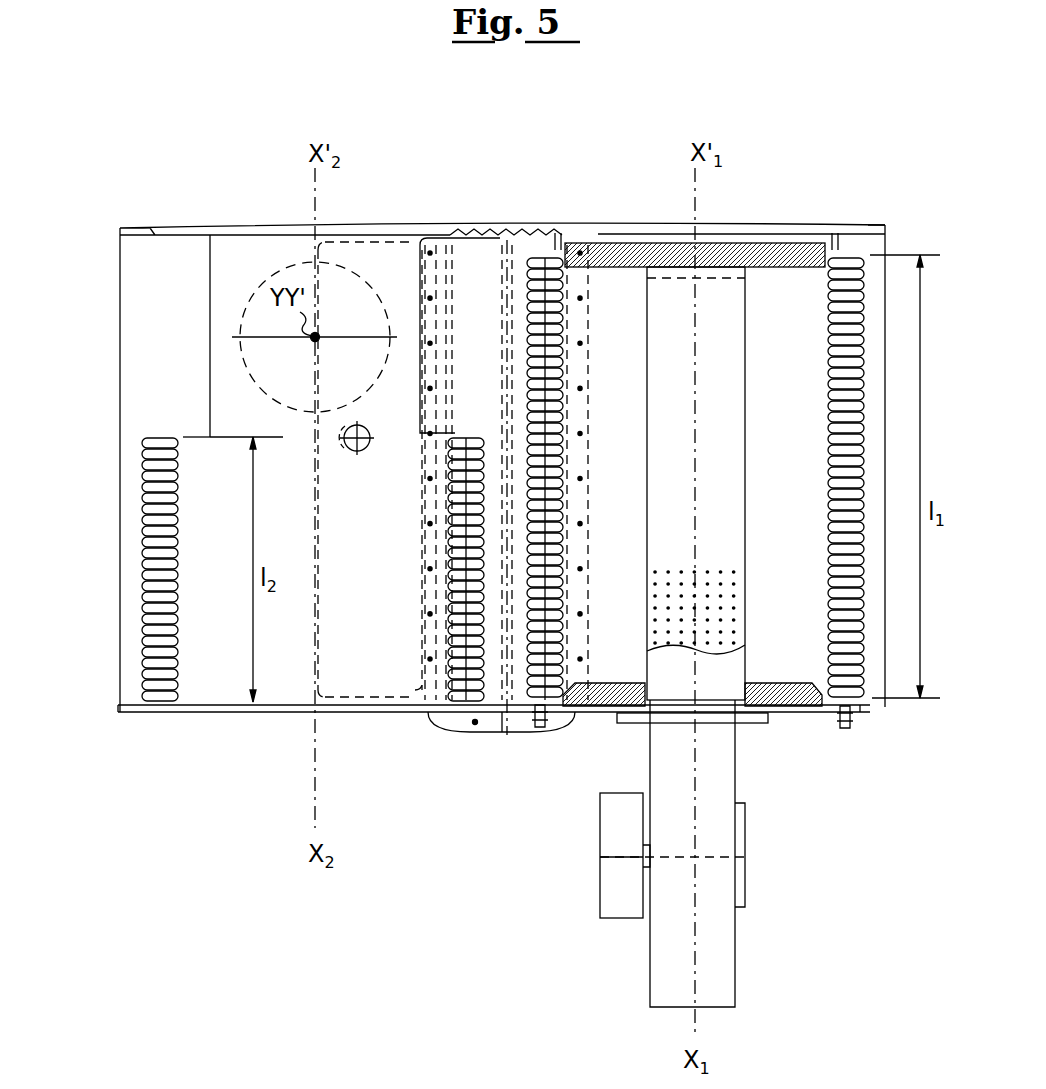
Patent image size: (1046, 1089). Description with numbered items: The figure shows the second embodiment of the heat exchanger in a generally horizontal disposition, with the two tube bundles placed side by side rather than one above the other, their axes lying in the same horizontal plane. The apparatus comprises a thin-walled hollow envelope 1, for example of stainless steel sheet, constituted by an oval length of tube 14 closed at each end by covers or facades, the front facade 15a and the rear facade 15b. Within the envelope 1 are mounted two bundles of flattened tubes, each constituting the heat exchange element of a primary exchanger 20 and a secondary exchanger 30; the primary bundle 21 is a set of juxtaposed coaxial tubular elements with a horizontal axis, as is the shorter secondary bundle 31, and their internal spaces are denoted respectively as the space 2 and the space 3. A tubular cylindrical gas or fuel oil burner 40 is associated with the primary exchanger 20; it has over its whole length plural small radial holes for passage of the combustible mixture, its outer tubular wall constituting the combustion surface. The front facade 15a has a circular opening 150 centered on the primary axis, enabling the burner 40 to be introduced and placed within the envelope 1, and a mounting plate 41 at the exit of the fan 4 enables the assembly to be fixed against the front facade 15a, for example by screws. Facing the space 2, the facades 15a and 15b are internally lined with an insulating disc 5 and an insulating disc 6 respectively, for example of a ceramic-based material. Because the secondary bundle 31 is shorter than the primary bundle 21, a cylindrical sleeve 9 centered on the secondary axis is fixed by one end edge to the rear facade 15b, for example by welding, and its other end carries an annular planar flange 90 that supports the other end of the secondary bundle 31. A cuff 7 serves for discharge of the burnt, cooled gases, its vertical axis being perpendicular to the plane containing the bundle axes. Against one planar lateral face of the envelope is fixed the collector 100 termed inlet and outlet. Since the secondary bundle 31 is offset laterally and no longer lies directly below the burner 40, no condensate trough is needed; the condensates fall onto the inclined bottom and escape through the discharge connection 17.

The envelope 1 is at (116, 247).
The internal space of the primary bundle 2 is at (628, 496).
The internal space of the secondary bundle 3 is at (225, 578).
The fan 4 is at (717, 945).
The insulating disc 5 is at (790, 683).
The insulating disc 6 is at (780, 245).
The cuff 7 is at (348, 268).
The cylindrical sleeve 9 is at (208, 335).
The length of tube 14 is at (120, 630).
The front facade 15a is at (412, 720).
The rear facade 15b is at (460, 222).
The discharge connection 17 is at (362, 452).
The primary exchanger 20 is at (625, 222).
The primary bundle 21 is at (832, 548).
The secondary exchanger 30 is at (253, 725).
The secondary bundle 31 is at (148, 540).
The burner 40 is at (742, 440).
The mounting plate 41 is at (752, 720).
The annular planar flange 90 is at (192, 438).
The inlet and outlet collector 100 is at (462, 735).
The circular opening 150 is at (654, 718).